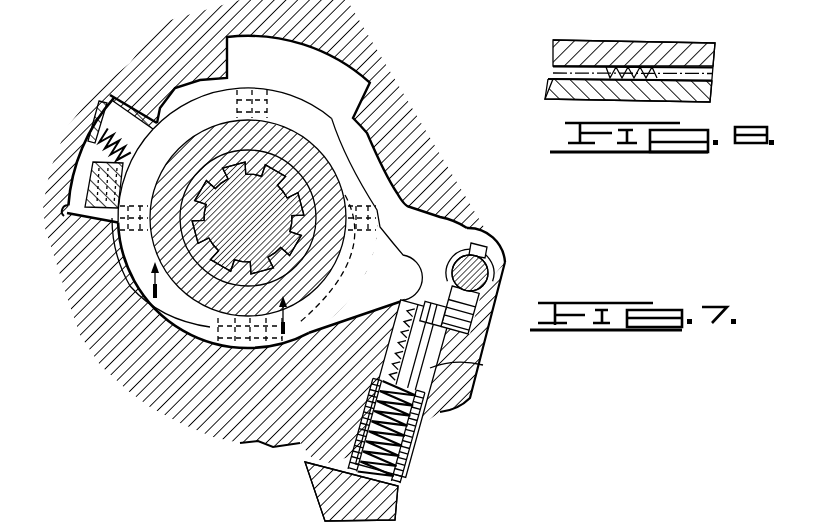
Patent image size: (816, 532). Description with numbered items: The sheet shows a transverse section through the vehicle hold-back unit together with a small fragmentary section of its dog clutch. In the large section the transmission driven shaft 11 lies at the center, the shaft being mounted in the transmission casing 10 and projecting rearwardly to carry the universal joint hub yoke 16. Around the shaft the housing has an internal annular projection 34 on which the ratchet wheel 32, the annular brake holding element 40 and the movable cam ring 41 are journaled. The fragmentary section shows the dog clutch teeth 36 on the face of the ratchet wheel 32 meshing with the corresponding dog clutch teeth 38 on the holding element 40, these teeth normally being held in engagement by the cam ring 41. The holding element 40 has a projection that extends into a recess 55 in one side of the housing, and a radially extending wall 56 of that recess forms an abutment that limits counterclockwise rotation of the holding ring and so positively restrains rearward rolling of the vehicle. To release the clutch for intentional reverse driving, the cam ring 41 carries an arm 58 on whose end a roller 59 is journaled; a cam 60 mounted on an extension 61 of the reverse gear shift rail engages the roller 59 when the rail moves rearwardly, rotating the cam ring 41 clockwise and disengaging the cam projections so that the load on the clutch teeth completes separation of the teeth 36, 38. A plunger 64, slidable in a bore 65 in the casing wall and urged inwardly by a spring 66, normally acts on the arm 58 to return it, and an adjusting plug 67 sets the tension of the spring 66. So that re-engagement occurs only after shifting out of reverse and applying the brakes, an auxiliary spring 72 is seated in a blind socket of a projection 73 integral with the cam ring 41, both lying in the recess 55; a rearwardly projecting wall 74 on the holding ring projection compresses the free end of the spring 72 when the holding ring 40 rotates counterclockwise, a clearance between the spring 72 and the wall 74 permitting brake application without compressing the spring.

In FIG. 7, the transmission casing 10 is at (150, 282).
In FIG. 7, the driven shaft 11 is at (252, 240).
In FIG. 7, the universal joint hub yoke 16 is at (170, 344).
In FIG. 7, the annular projection 34 is at (232, 308).
In FIG. 7, the movable cam ring 41 is at (347, 157).
In FIG. 7, the recess 55 is at (85, 183).
In FIG. 7, the radially extending wall 56 is at (66, 212).
In FIG. 7, the arm 58 is at (458, 232).
In FIG. 7, the roller 59 is at (508, 281).
In FIG. 7, the cam 60 is at (467, 337).
In FIG. 7, the extension of the reverse gear shift rail 61 is at (482, 258).
In FIG. 7, the plunger 64 is at (480, 373).
In FIG. 7, the bore 65 is at (420, 392).
In FIG. 7, the spring 66 is at (398, 442).
In FIG. 7, the adjusting plug 67 is at (396, 499).
In FIG. 7, the auxiliary spring 72 is at (100, 149).
In FIG. 7, the projection 73 is at (92, 222).
In FIG. 7, the rearwardly projecting wall 74 is at (98, 100).
In FIG. 9, the ratchet wheel 32 is at (570, 97).
In FIG. 9, the dog clutch teeth 36 is at (634, 66).
In FIG. 9, the dog clutch teeth 38 is at (622, 82).
In FIG. 9, the annular brake holding element 40 is at (600, 24).